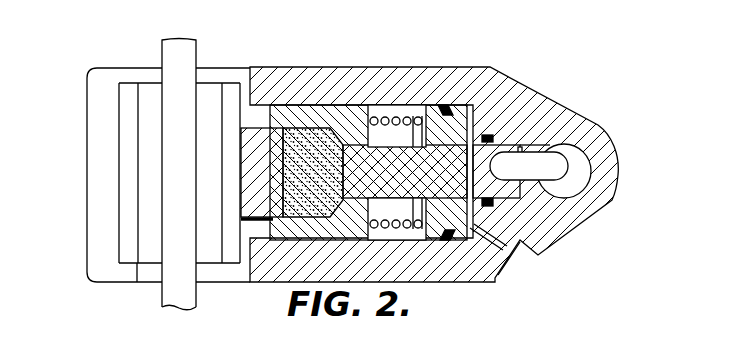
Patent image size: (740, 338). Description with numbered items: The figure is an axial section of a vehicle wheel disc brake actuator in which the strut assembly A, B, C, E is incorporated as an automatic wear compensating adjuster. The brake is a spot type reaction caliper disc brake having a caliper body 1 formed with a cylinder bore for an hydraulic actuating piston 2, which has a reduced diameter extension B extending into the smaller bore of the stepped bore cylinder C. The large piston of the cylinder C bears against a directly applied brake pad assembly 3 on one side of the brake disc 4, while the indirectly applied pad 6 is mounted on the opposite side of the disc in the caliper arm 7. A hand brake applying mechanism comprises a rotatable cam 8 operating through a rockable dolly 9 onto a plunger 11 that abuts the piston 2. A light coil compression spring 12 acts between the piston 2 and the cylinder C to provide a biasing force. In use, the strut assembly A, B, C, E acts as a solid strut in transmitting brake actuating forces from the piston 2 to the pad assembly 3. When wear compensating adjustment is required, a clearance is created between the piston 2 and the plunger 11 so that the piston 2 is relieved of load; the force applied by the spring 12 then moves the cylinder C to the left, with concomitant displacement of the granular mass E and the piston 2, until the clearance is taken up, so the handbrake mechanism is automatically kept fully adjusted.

The caliper body 1 is at (415, 72).
The hydraulic actuating piston 2 is at (360, 175).
The directly applied brake pad assembly 3 is at (208, 97).
The brake disc 4 is at (183, 55).
The indirectly applied pad 6 is at (152, 98).
The caliper arm 7 is at (132, 272).
The rotatable cam 8 is at (577, 168).
The rockable dolly 9 is at (563, 157).
The plunger 11 is at (500, 140).
The light coil compression spring 12 is at (398, 228).
The strut assembly A is at (247, 198).
The reduced diameter extension B is at (360, 182).
The stepped bore cylinder C is at (340, 133).
The granular mass E is at (302, 195).